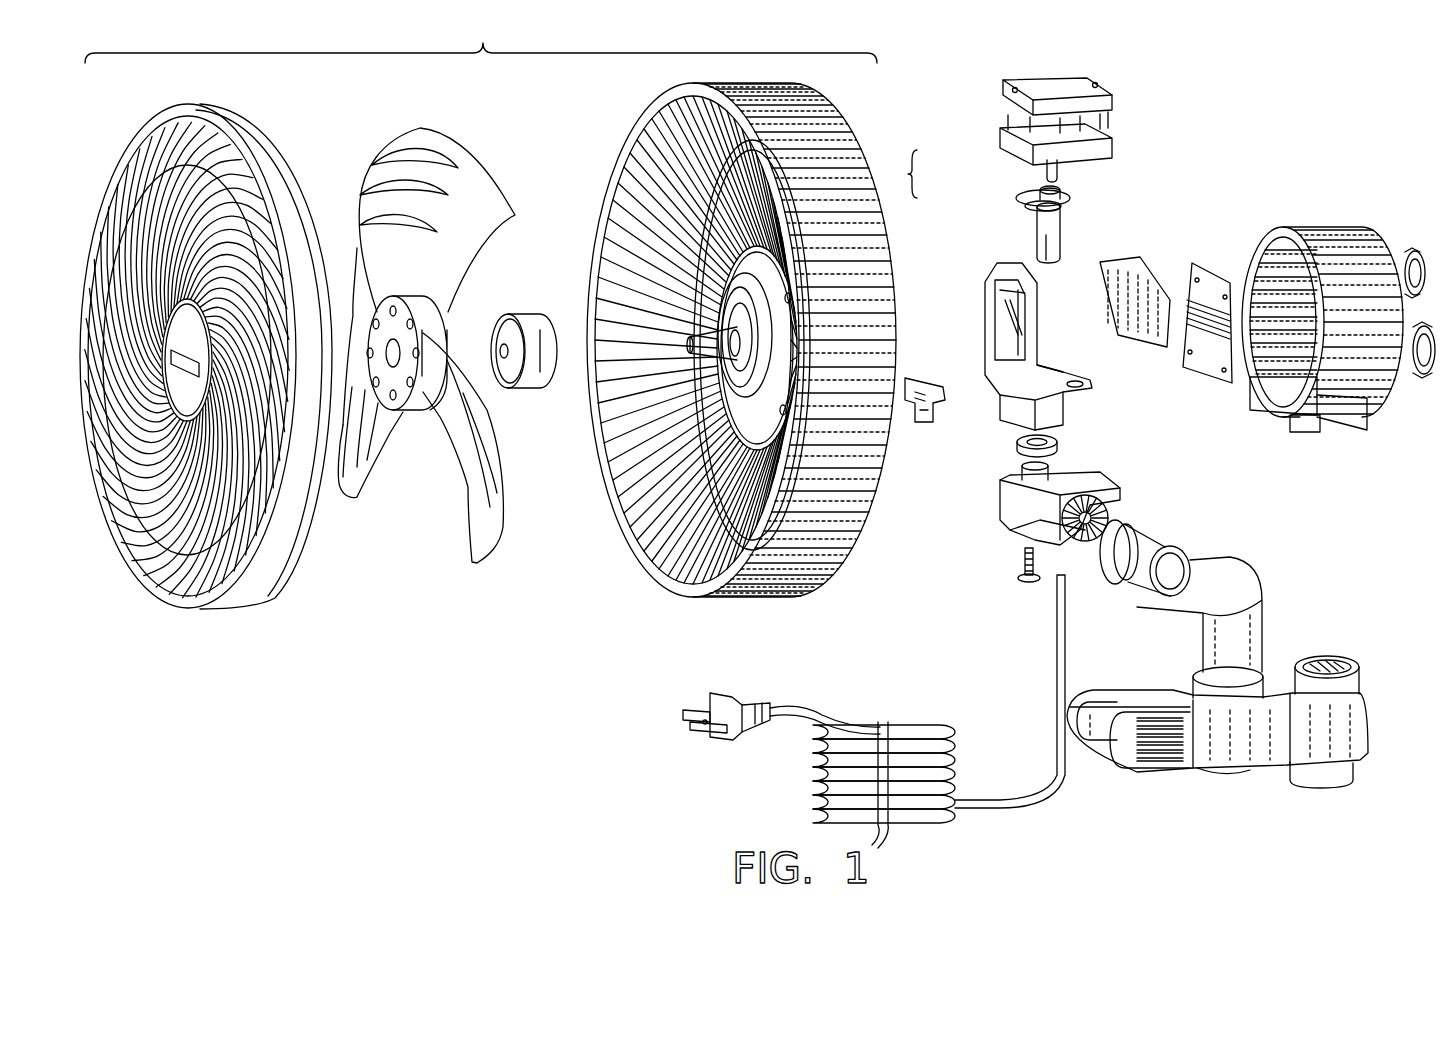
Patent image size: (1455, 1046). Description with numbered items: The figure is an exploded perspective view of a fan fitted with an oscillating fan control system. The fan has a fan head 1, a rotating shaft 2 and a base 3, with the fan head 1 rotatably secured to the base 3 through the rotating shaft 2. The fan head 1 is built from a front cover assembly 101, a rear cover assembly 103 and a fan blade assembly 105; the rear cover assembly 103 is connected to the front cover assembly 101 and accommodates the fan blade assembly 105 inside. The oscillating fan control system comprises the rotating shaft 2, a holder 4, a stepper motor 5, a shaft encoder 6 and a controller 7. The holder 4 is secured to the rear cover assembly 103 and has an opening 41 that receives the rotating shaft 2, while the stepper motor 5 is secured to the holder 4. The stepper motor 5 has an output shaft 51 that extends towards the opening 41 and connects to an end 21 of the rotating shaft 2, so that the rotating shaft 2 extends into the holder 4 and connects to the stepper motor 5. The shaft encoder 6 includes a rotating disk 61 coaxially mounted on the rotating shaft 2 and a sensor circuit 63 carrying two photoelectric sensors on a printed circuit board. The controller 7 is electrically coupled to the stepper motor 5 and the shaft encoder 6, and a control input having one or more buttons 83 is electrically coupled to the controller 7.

The fan head 1 is at (481, 37).
The front cover assembly 101 is at (265, 150).
The rear cover assembly 103 is at (806, 98).
The fan blade assembly 105 is at (465, 153).
The rotating shaft 2 is at (1062, 228).
The end of the rotating shaft 21 is at (1070, 199).
The base 3 is at (1120, 492).
The holder 4 is at (1031, 346).
The opening 41 is at (1017, 359).
The stepper motor 5 is at (1088, 81).
The output shaft 51 is at (1059, 174).
The shaft encoder 6 is at (905, 174).
The rotating disk 61 is at (1025, 190).
The sensor circuit 63 is at (922, 376).
The controller 7 is at (1205, 283).
The buttons 83 is at (1427, 262).